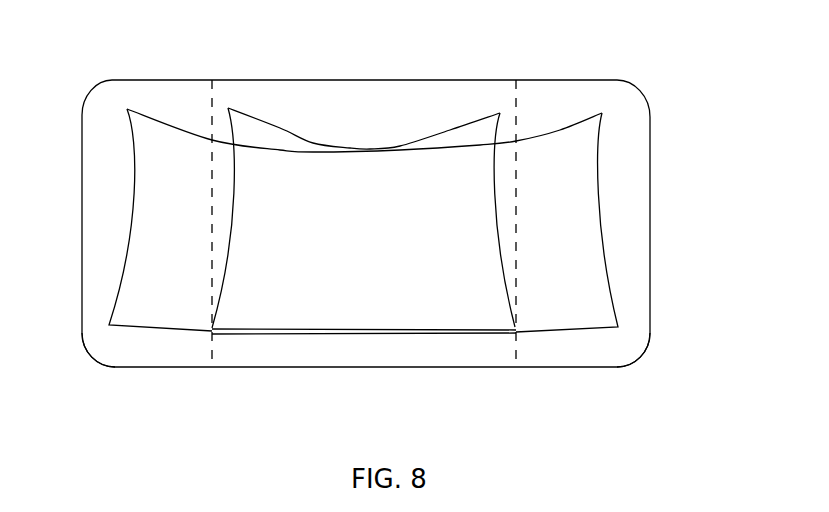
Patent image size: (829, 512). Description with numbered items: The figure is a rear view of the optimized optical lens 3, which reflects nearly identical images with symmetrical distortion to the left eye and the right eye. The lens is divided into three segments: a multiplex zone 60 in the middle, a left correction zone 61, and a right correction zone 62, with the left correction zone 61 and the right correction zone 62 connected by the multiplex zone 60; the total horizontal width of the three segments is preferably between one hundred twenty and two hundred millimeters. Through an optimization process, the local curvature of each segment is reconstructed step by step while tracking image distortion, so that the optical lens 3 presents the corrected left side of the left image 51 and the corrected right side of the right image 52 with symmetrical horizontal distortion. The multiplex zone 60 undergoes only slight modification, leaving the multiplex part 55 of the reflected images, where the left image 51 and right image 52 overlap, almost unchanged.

The optical lens 3 is at (633, 145).
The left image 51 is at (163, 135).
The right image 52 is at (567, 140).
The multiplex part 55 is at (317, 307).
The multiplex zone 60 is at (375, 356).
The left correction zone 61 is at (153, 354).
The right correction zone 62 is at (588, 355).